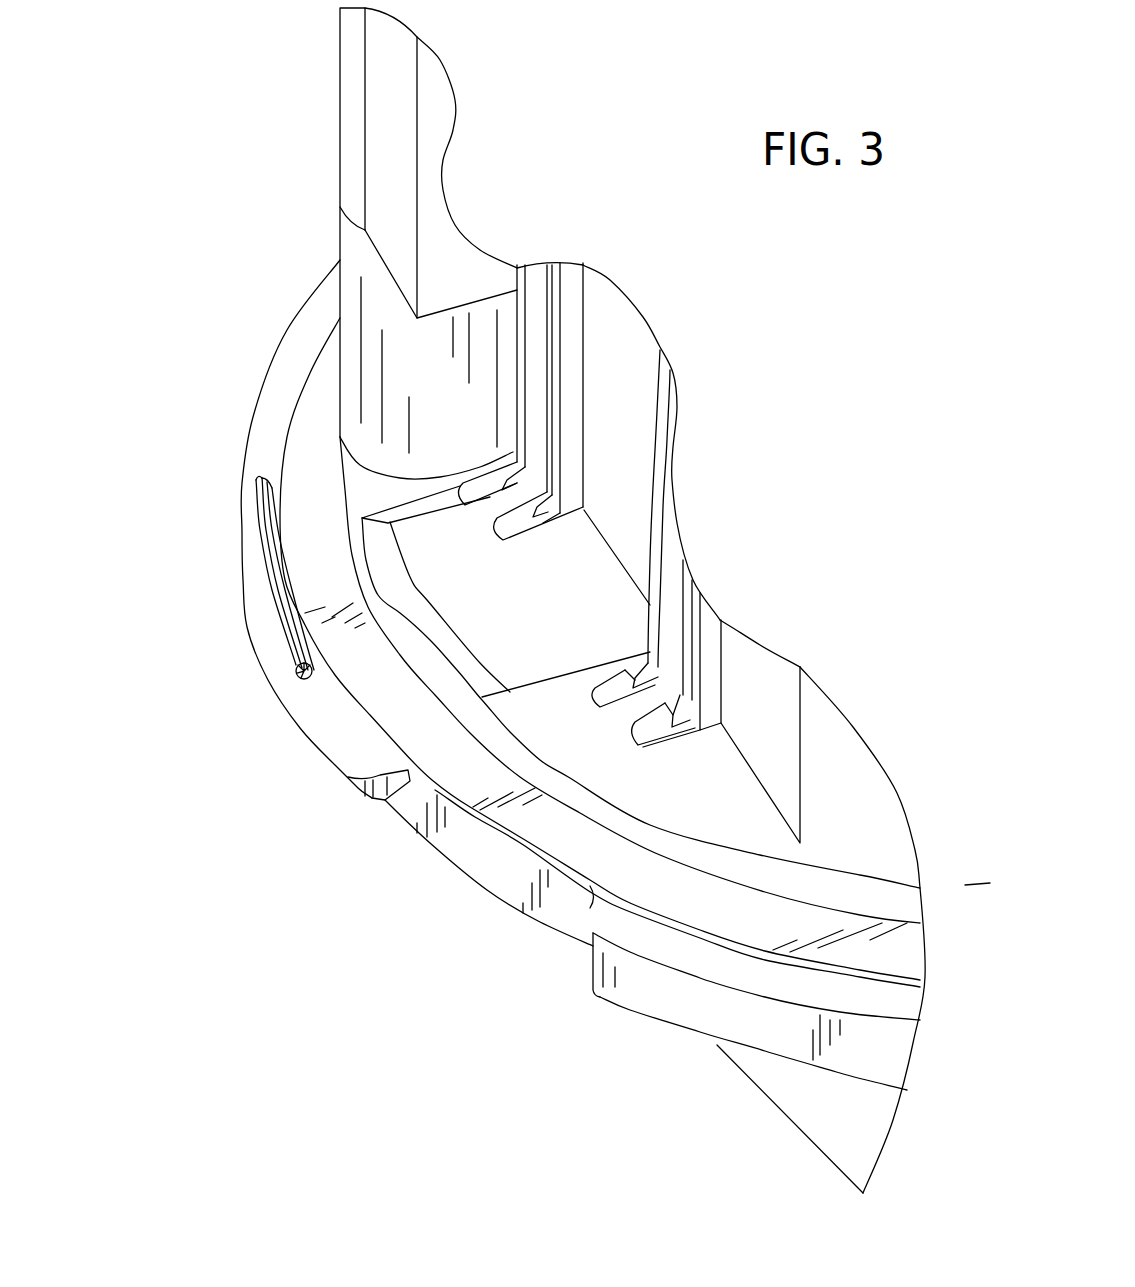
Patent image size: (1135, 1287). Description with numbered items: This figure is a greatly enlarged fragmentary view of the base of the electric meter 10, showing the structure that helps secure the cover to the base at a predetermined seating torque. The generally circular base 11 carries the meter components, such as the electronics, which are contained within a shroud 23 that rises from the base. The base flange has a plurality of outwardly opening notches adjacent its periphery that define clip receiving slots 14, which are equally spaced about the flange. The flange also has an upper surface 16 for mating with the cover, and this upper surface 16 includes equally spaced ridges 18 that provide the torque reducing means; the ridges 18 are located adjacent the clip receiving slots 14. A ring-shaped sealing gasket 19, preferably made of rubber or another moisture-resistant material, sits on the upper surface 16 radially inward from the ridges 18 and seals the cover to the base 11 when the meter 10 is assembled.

The electric meter 10 is at (247, 205).
The base 11 is at (285, 335).
The clip receiving slots 14 is at (453, 842).
The upper surface 16 is at (280, 400).
The ridges 18 is at (260, 550).
The sealing gasket 19 is at (543, 822).
The shroud 23 is at (337, 147).